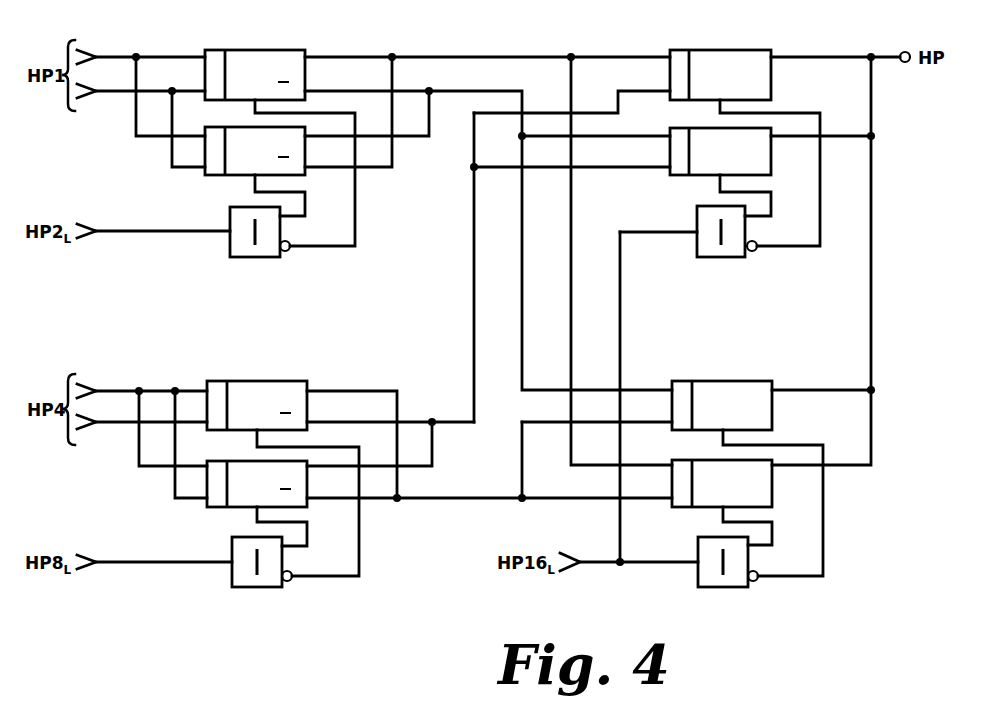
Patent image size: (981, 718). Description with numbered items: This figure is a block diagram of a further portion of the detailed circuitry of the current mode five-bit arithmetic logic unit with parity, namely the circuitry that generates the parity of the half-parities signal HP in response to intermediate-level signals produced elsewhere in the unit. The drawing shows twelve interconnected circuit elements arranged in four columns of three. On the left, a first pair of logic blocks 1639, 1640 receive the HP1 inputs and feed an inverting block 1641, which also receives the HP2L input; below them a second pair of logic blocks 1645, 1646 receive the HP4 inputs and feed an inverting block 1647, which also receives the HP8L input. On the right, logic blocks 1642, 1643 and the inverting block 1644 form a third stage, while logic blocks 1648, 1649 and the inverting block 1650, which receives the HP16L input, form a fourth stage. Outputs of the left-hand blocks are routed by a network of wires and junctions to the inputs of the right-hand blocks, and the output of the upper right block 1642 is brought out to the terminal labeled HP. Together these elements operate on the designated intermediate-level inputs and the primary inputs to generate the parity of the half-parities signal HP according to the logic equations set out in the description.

The AND gate 1639 is at (244, 51).
The AND gate 1640 is at (246, 128).
The inverter 1641 is at (243, 208).
The AND gate 1642 is at (709, 51).
The AND gate 1643 is at (706, 129).
The inverter 1644 is at (708, 208).
The AND gate 1645 is at (246, 382).
The AND gate 1646 is at (246, 461).
The inverter 1647 is at (243, 538).
The AND gate 1648 is at (710, 382).
The AND gate 1649 is at (709, 461).
The inverter 1650 is at (708, 538).